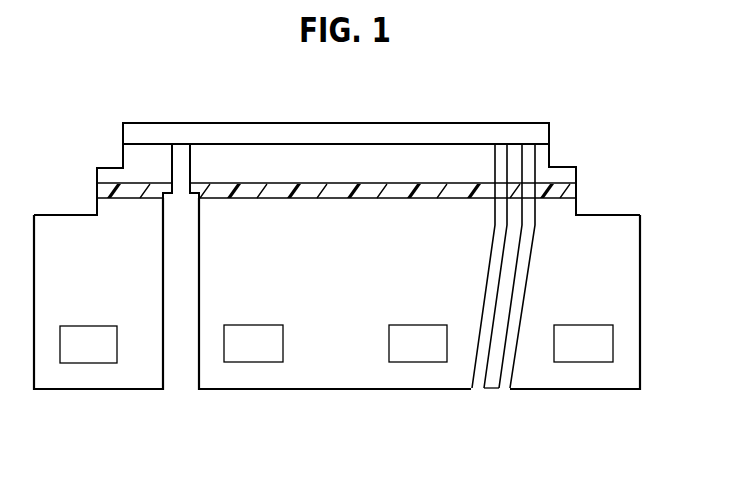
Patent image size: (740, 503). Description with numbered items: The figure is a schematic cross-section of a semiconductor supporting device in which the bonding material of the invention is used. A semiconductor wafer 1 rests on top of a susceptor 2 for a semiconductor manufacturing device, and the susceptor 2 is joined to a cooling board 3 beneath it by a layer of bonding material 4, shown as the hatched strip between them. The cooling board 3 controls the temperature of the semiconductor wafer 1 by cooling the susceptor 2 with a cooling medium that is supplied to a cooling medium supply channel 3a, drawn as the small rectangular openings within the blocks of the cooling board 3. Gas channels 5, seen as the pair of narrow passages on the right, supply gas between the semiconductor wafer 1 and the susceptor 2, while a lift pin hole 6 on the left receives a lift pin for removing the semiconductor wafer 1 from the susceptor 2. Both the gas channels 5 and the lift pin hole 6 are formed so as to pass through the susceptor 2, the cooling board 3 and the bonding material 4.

The semiconductor wafer 1 is at (485, 134).
The susceptor 2 is at (563, 173).
The cooling board 3 is at (625, 285).
The cooling medium supply channel 3a is at (86, 353).
The bonding material 4 is at (563, 190).
The gas channels 5 is at (503, 383).
The lift pin hole 6 is at (182, 170).